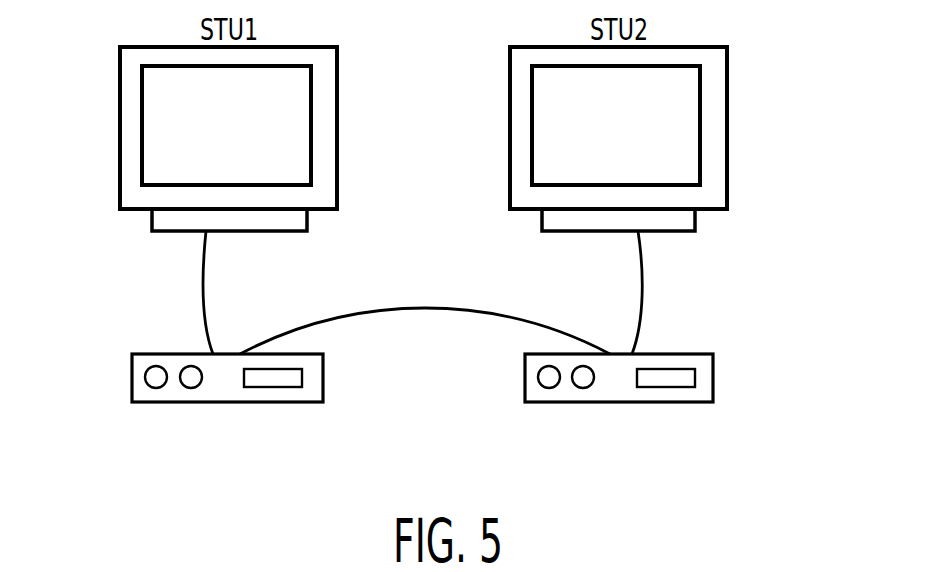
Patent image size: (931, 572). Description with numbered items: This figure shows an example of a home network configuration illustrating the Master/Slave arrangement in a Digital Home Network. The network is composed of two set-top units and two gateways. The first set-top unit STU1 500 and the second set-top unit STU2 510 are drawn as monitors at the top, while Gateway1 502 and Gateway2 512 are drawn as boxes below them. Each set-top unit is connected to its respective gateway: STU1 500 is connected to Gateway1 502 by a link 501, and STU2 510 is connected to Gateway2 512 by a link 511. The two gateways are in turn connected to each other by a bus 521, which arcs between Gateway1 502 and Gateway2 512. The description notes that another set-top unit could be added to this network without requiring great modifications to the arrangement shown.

The STU1 500 is at (120, 167).
The link 501 is at (203, 290).
The Gateway1 502 is at (132, 378).
The STU2 510 is at (727, 170).
The link 511 is at (642, 288).
The Gateway2 512 is at (713, 372).
The bus 521 is at (420, 308).